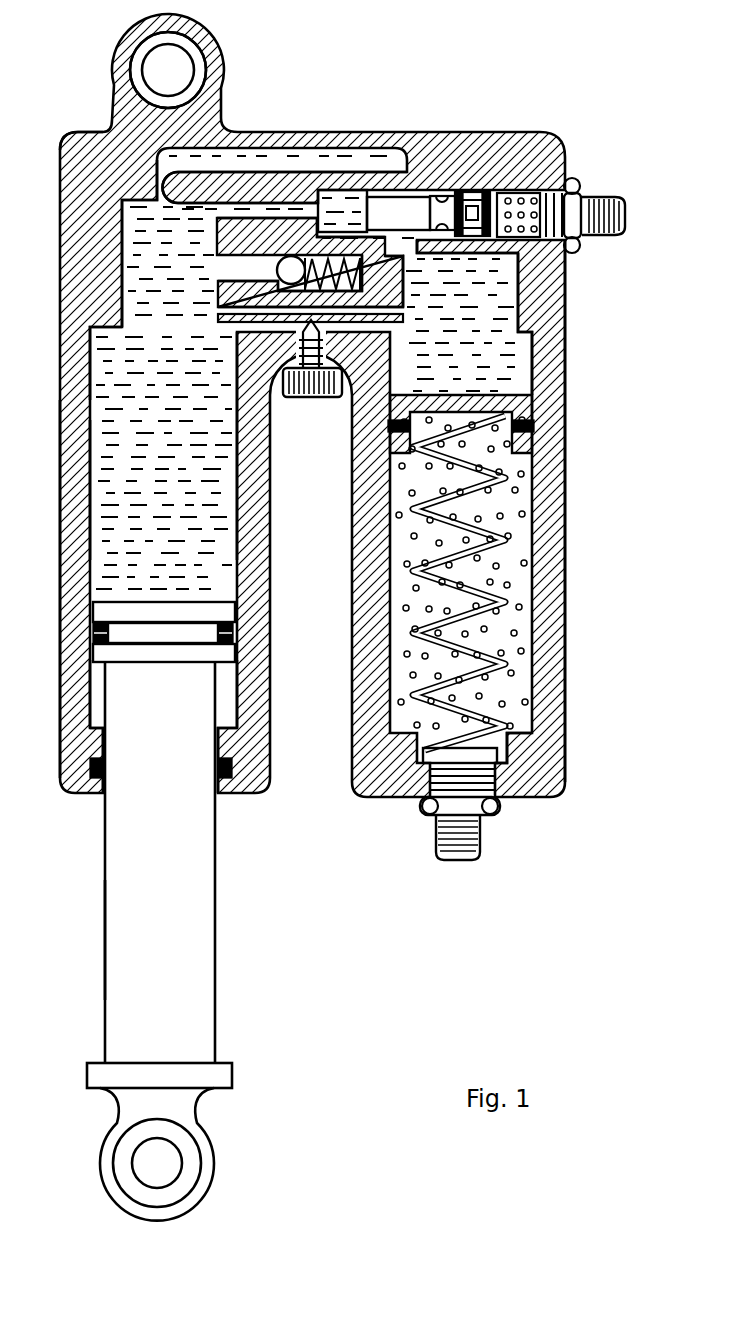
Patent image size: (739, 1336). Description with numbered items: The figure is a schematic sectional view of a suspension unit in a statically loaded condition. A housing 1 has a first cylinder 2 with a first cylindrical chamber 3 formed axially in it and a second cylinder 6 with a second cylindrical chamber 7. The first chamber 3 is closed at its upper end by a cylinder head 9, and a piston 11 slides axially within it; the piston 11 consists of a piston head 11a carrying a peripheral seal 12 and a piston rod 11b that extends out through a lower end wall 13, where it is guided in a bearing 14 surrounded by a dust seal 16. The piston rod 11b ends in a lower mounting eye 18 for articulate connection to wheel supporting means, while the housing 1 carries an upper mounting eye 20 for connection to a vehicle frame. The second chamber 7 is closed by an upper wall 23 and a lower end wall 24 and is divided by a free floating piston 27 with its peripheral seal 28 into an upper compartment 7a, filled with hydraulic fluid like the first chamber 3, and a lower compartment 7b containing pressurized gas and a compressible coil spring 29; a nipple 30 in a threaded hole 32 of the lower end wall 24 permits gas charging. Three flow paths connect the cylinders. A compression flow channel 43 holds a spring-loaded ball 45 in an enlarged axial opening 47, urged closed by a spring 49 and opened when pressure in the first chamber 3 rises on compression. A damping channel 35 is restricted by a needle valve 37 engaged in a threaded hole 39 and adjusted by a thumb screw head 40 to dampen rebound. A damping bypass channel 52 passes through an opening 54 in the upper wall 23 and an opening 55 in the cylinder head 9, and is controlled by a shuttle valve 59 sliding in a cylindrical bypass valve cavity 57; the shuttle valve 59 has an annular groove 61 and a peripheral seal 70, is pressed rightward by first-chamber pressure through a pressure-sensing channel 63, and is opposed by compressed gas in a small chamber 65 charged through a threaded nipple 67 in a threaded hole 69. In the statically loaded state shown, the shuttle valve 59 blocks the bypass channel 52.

The housing 1 is at (60, 162).
The first cylinder 2 is at (60, 490).
The first cylindrical chamber 3 is at (172, 474).
The second cylinder 6 is at (565, 448).
The second cylindrical chamber 7 is at (550, 556).
The upper compartment 7a is at (548, 372).
The lower compartment 7b is at (503, 567).
The cylinder head 9 is at (110, 330).
The piston 11 is at (172, 791).
The piston head 11a is at (135, 612).
The piston rod 11b is at (105, 900).
The peripheral seal 12 is at (94, 634).
The lower end wall 13 is at (93, 724).
The bearing 14 is at (96, 742).
The dust seal 16 is at (93, 768).
The lower mounting eye 18 is at (128, 1146).
The upper mounting eye 20 is at (200, 68).
The upper wall 23 is at (525, 347).
The lower end wall 24 is at (512, 735).
The free floating piston 27 is at (460, 394).
The peripheral seal 28 is at (525, 428).
The compressible coil spring 29 is at (495, 520).
The nipple 30 is at (456, 860).
The threaded hole 32 is at (493, 790).
The damping channel 35 is at (218, 318).
The needle valve 37 is at (237, 355).
The threaded hole 39 is at (325, 338).
The thumb screw head 40 is at (318, 398).
The compression flow channel 43 is at (276, 273).
The spring-loaded ball 45 is at (218, 296).
The enlarged axial opening 47 is at (403, 300).
The spring 49 is at (362, 272).
The damping bypass channel 52 is at (270, 165).
The opening 54 is at (400, 249).
The opening 55 is at (163, 250).
The cylindrical bypass valve cavity 57 is at (338, 190).
The shuttle valve 59 is at (413, 228).
The annular groove 61 is at (440, 198).
The pressure-sensing channel 63 is at (228, 208).
The small chamber 65 is at (520, 200).
The threaded nipple 67 is at (625, 216).
The threaded hole 69 is at (572, 180).
The peripheral seal 70 is at (466, 196).